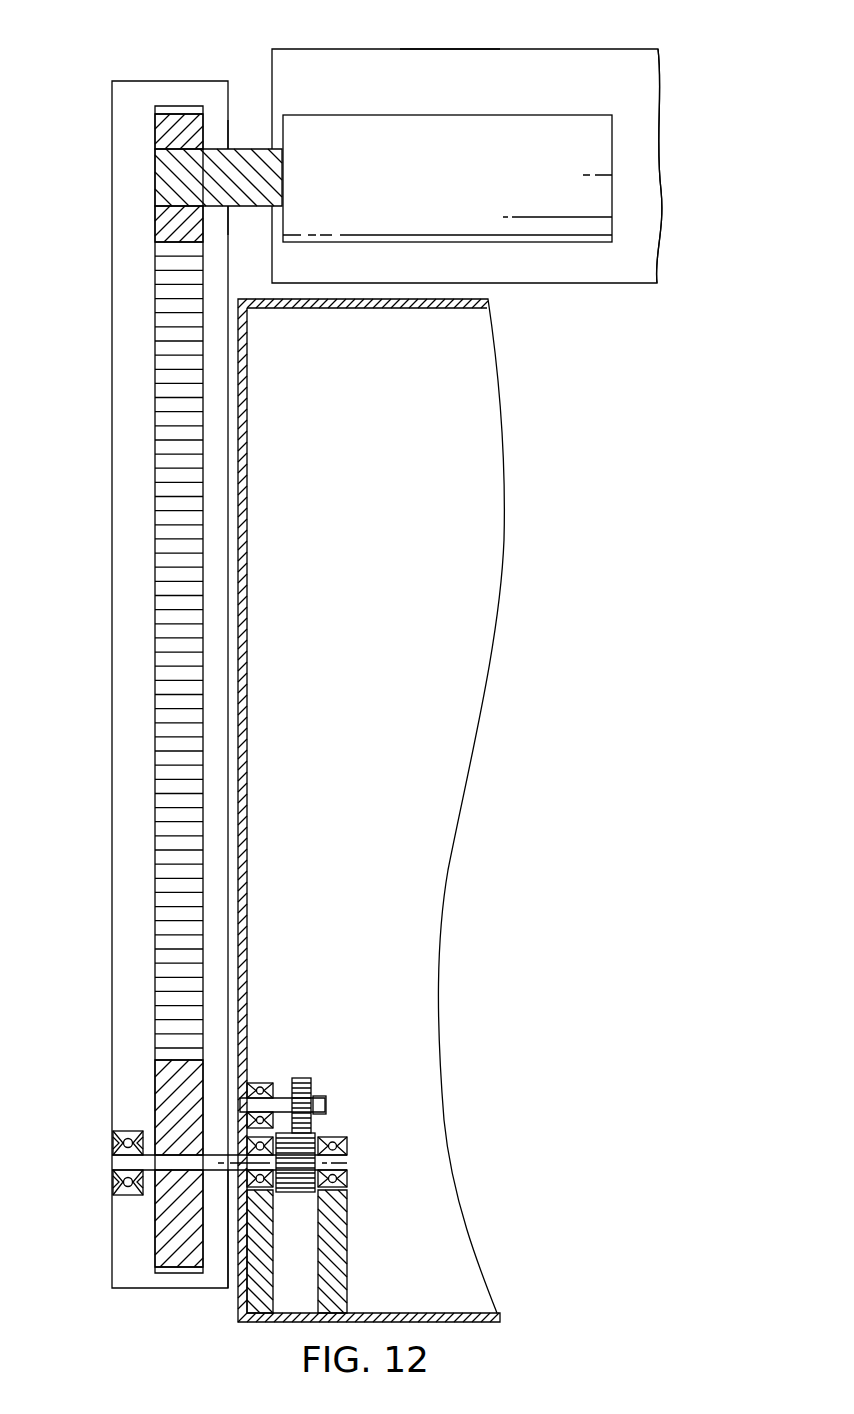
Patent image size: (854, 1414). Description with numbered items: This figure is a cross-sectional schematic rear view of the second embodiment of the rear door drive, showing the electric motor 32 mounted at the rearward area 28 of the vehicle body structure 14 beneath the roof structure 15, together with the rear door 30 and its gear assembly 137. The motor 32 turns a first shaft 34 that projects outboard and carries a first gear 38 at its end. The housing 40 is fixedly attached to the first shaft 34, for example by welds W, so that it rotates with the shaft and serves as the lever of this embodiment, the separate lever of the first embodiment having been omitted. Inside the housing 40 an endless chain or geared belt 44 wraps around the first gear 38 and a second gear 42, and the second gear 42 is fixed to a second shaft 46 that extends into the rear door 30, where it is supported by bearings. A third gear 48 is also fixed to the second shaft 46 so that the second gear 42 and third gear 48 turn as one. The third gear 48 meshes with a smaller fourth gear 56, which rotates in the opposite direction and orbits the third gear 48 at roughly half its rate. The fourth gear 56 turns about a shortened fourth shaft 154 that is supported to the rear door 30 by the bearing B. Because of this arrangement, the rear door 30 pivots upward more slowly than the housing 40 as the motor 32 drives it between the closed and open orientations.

The vehicle body structure 14 is at (578, 49).
The roof structure 15 is at (481, 47).
The rearward area 28 is at (666, 78).
The electric motor 32 is at (390, 158).
The rear door 30 is at (448, 571).
The first shaft 34 is at (182, 180).
The first gear 38 is at (172, 130).
The housing 40 is at (112, 338).
The second gear 42 is at (178, 1091).
The belt 44 is at (172, 731).
The second shaft 46 is at (149, 1163).
The third gear 48 is at (298, 1172).
The fourth gear 56 is at (300, 1087).
The gear assembly 137 is at (327, 1110).
The fourth shaft 154 is at (324, 1103).
The bearing B is at (258, 1083).
The welds W is at (230, 148).